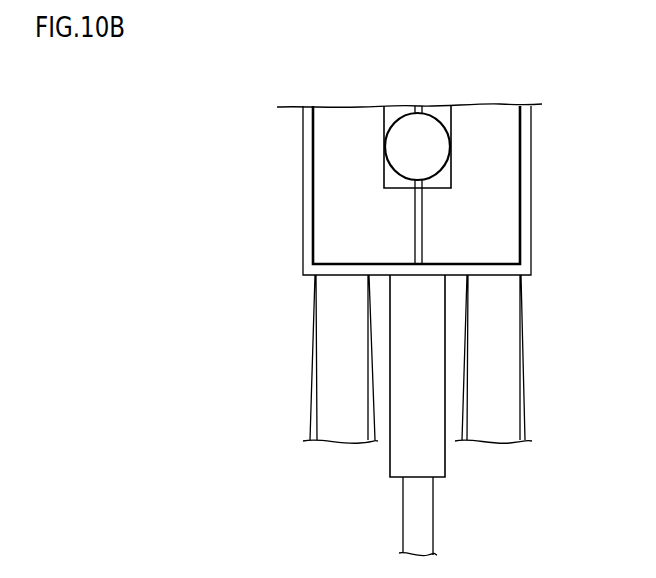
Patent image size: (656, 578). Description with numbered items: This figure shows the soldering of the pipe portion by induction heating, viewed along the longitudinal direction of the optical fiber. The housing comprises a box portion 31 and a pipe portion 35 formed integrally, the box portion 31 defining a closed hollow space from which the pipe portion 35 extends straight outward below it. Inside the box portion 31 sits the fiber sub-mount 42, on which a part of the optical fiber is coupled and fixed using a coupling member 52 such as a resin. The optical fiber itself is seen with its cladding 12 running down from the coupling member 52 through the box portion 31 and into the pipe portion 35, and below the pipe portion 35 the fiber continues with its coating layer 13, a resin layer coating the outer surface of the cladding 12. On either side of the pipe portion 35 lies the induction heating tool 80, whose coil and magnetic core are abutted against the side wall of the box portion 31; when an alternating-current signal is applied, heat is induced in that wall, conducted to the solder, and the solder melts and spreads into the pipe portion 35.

The box portion 31 is at (289, 173).
The coupling member 52 is at (440, 144).
The fiber sub-mount 42 is at (440, 180).
The cladding 12 is at (418, 254).
The induction heating tool 80 is at (308, 380).
The pipe portion 35 is at (420, 463).
The coating layer 13 is at (420, 513).